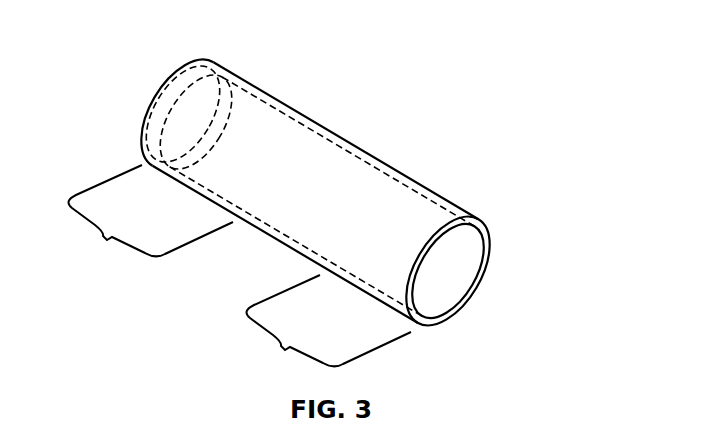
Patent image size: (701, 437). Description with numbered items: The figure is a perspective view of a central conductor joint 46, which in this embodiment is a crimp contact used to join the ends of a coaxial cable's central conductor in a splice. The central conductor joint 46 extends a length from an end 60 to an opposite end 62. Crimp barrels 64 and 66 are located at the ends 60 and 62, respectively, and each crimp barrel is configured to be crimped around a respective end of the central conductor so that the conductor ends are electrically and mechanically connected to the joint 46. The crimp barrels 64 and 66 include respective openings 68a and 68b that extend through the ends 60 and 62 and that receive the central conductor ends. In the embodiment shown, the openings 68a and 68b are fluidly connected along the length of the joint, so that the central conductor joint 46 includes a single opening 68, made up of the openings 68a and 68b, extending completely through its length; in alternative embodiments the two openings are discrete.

The central conductor joint 46 is at (318, 193).
The end 60 is at (349, 192).
The opposite end 62 is at (232, 41).
The crimp barrel 64 is at (329, 326).
The crimp barrel 66 is at (151, 216).
The opening 68 is at (302, 185).
The opening 68a is at (452, 285).
The opening 68b is at (238, 86).